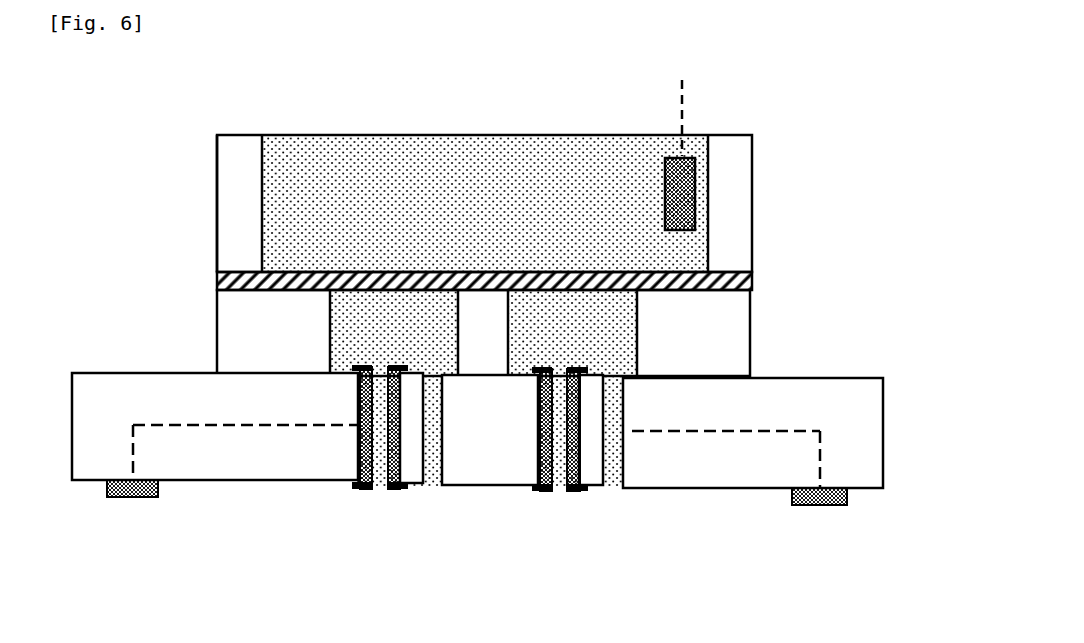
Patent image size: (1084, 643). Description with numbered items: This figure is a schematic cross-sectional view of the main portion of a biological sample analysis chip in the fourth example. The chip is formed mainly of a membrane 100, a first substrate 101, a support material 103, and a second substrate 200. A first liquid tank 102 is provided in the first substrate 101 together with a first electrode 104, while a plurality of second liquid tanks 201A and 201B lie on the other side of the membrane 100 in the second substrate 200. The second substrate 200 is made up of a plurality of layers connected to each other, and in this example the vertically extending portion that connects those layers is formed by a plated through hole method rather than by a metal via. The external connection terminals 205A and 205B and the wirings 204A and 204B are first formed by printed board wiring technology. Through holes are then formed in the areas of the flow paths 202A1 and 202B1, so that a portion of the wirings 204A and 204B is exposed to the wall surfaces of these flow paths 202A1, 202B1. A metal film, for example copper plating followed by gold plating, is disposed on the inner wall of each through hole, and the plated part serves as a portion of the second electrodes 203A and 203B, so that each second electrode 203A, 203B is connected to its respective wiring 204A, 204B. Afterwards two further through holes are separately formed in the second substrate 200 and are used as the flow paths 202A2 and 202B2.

The membrane 100 is at (718, 281).
The first substrate 101 is at (757, 292).
The first liquid tank 102 is at (458, 152).
The support material 103 is at (229, 168).
The first electrode 104 is at (682, 158).
The second substrate 200 is at (890, 378).
The second liquid tank 201A is at (397, 322).
The second liquid tank 201B is at (583, 327).
The flow path 202A1 is at (375, 464).
The flow path 202A2 is at (432, 467).
The flow path 202B1 is at (548, 468).
The flow path 202B2 is at (612, 468).
The second electrode 203A is at (401, 492).
The second electrode 203B is at (580, 494).
The wiring 204A is at (240, 430).
The wiring 204B is at (707, 433).
The external connection terminal 205A is at (135, 498).
The external connection terminal 205B is at (820, 508).